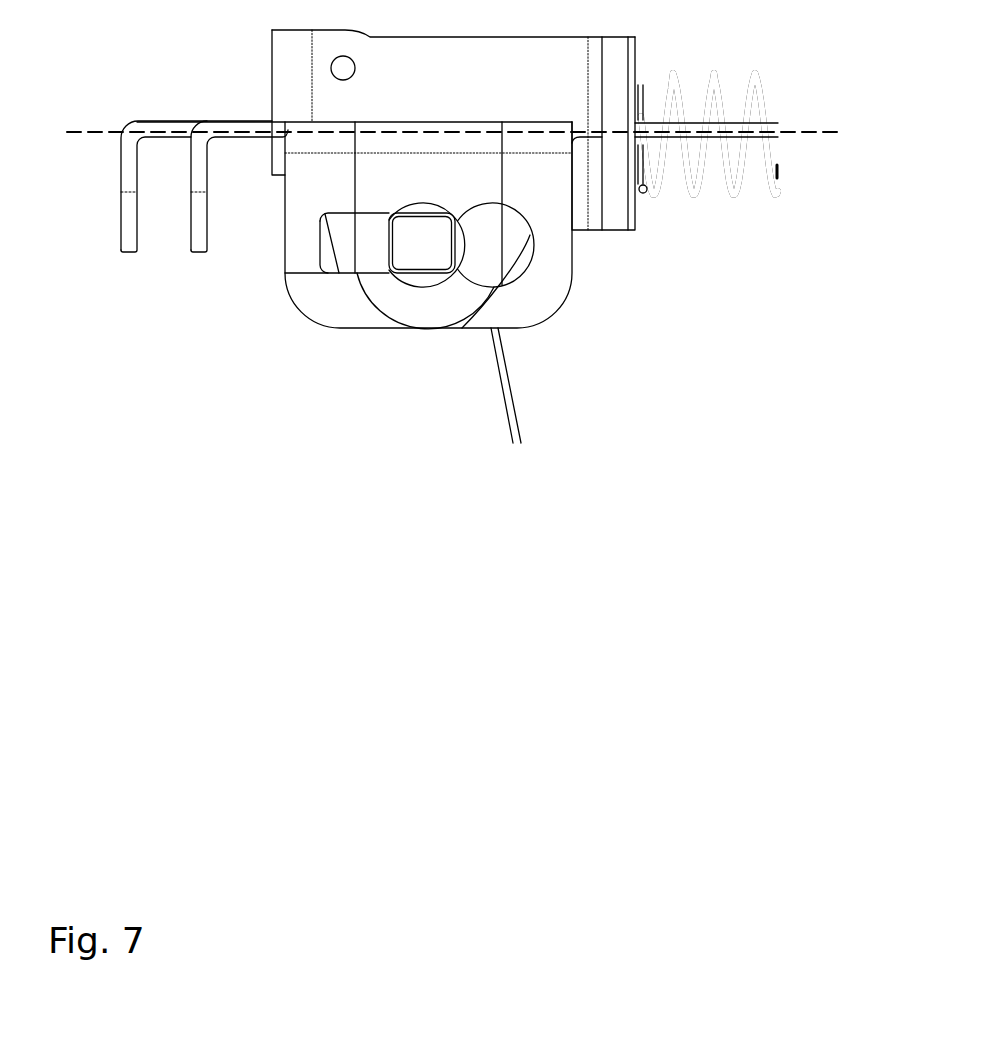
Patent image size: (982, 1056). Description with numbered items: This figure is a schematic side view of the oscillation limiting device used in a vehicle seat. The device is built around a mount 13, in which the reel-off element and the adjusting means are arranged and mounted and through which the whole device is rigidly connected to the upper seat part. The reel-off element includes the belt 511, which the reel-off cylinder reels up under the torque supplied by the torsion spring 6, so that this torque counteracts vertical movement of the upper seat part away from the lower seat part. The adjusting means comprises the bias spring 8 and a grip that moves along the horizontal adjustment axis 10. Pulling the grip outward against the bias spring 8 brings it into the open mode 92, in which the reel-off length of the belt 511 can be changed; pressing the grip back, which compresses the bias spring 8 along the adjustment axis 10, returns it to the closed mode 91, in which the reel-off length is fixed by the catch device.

The torsion spring 6 is at (419, 257).
The bias spring 8 is at (737, 195).
The adjustment axis 10 is at (822, 132).
The mount 13 is at (537, 300).
The closed mode 91 is at (195, 252).
The open mode 92 is at (122, 252).
The belt 511 is at (513, 392).